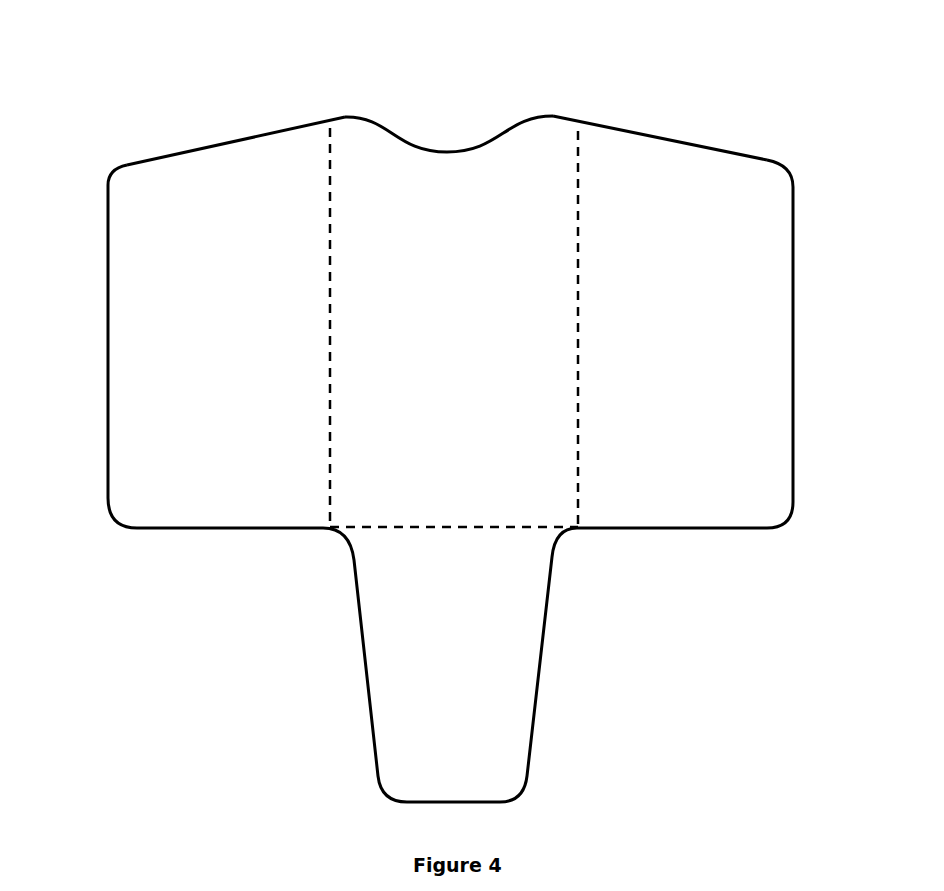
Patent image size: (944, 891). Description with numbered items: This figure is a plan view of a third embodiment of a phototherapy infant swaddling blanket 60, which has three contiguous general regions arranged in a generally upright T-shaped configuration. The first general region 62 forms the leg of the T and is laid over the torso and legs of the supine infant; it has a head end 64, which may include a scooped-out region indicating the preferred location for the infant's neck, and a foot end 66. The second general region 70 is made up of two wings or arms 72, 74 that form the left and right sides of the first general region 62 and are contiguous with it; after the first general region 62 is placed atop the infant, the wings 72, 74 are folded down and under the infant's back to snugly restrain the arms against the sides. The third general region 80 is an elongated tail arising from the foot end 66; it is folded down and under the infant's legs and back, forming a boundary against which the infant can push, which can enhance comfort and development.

The swaddling blanket 60 is at (446, 412).
The first general region 62 is at (470, 272).
The head end 64 is at (410, 138).
The foot end 66 is at (467, 497).
The second general region 70 is at (108, 178).
The wing 72 is at (138, 272).
The wing 74 is at (742, 307).
The third general region 80 is at (448, 670).